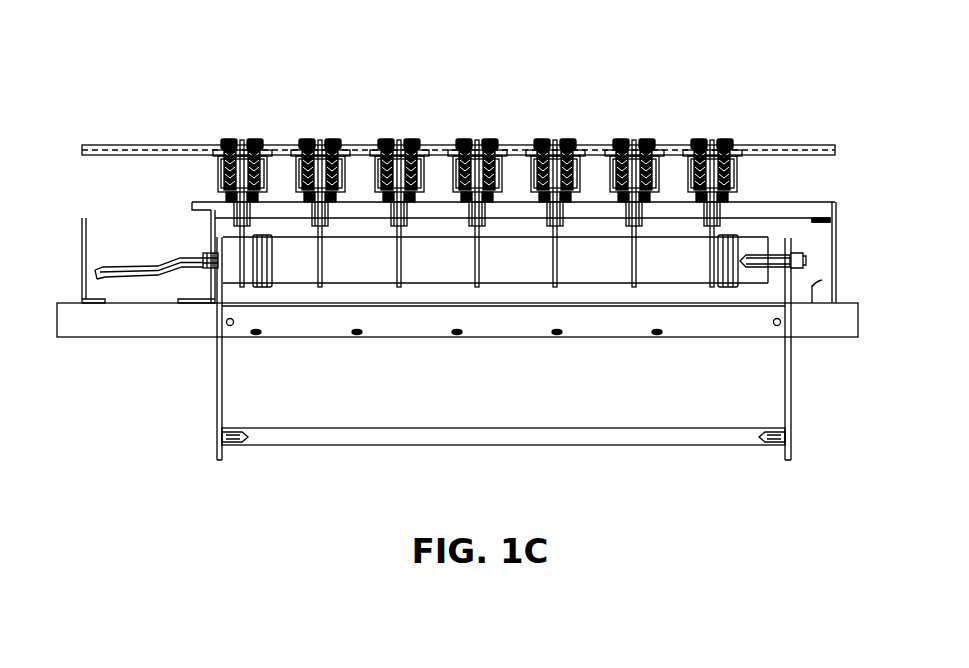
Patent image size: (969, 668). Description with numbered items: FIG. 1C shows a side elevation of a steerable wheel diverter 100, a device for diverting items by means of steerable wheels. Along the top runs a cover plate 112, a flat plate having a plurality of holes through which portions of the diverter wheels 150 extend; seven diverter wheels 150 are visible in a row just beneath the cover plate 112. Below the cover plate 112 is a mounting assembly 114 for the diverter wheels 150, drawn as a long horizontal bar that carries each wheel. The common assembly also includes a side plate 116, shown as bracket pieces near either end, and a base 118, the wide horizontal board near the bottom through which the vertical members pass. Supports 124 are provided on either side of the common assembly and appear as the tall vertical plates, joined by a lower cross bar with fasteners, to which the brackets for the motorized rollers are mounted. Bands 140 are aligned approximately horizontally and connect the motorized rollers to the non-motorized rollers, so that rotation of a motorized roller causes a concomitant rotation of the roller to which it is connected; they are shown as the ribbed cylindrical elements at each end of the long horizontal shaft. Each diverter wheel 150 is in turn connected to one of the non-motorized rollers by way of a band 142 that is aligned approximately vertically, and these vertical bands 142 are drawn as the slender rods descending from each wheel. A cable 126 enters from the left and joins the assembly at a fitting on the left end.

The steerable wheel diverter 100 is at (660, 62).
The cover plate 112 is at (113, 145).
The mounting assembly 114 is at (820, 210).
The side plate 116 is at (206, 273).
The base 118 is at (828, 327).
The supports 124 is at (220, 412).
The cable 126 is at (128, 264).
The bands 140 is at (268, 283).
The band 142 is at (252, 235).
The diverter wheels 150 is at (236, 140).